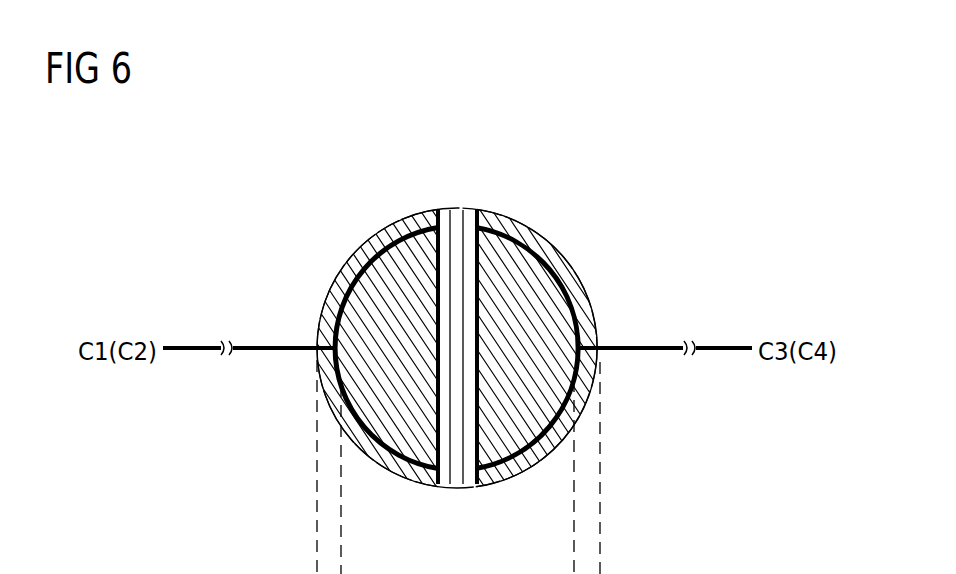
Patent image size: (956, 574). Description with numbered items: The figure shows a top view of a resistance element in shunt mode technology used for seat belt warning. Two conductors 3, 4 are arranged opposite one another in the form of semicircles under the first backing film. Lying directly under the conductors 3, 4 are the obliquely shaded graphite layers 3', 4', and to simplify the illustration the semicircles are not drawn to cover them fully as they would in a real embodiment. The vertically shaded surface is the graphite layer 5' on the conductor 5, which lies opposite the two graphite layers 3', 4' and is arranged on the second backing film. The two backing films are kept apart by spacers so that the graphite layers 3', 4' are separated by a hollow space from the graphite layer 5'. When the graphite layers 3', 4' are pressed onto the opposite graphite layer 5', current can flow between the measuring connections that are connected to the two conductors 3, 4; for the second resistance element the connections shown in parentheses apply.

The conductor 3 is at (377, 330).
The graphite layer 3' is at (386, 315).
The conductor 4 is at (537, 356).
The graphite layer 4' is at (527, 375).
The conductor 5 is at (436, 383).
The graphite layer 5' is at (473, 384).